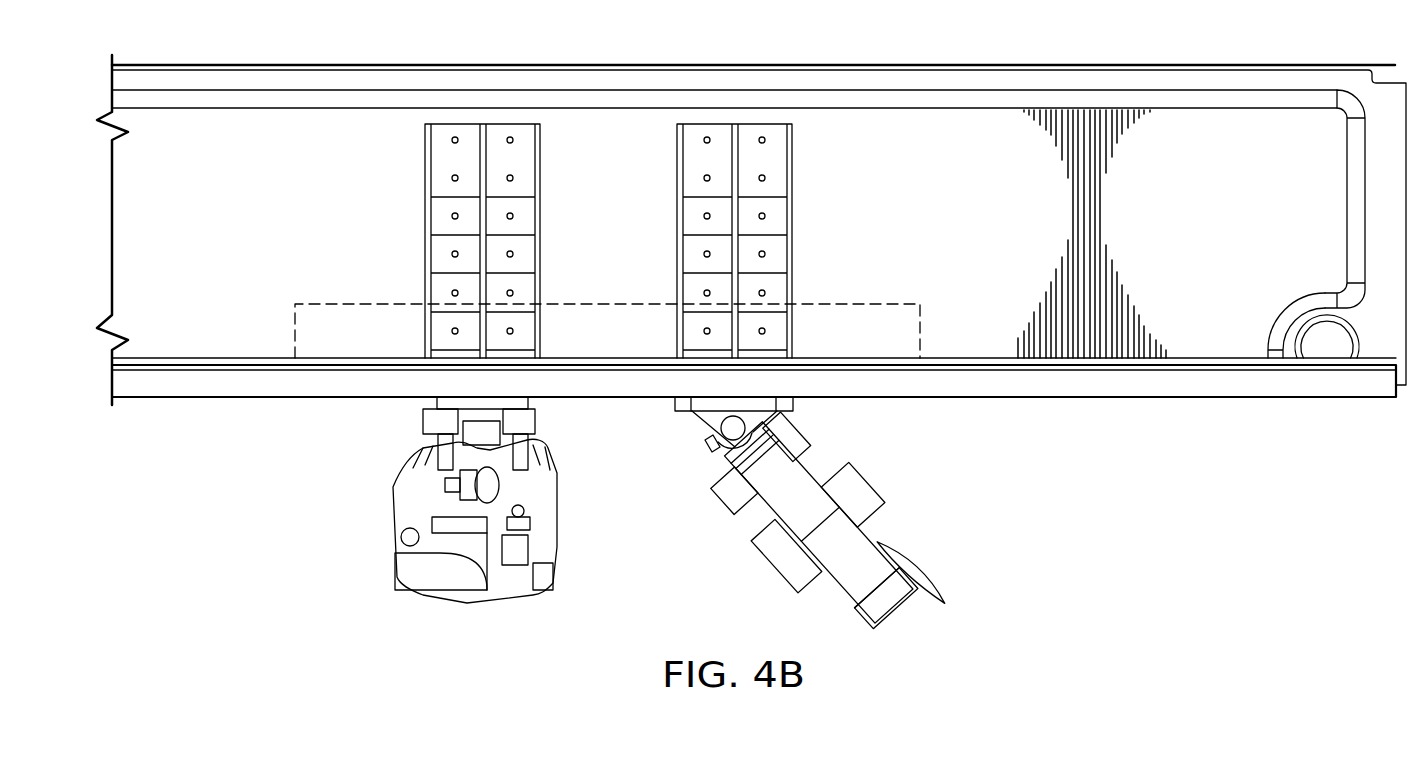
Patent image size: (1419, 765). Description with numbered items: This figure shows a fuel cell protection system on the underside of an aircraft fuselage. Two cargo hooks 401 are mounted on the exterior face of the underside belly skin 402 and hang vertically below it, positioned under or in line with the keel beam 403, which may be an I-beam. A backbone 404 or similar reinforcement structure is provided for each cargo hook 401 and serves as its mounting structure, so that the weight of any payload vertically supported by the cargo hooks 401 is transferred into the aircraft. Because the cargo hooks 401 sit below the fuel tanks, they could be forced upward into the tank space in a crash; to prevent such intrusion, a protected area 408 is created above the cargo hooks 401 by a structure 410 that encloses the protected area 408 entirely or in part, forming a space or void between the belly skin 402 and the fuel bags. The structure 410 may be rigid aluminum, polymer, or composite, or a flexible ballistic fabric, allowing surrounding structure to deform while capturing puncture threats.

The cargo hook 401 is at (393, 545).
The underside belly skin 402 is at (243, 398).
The keel beam 403 is at (247, 193).
The backbone 404 is at (425, 192).
The protected area 408 is at (866, 328).
The structure 410 is at (325, 304).